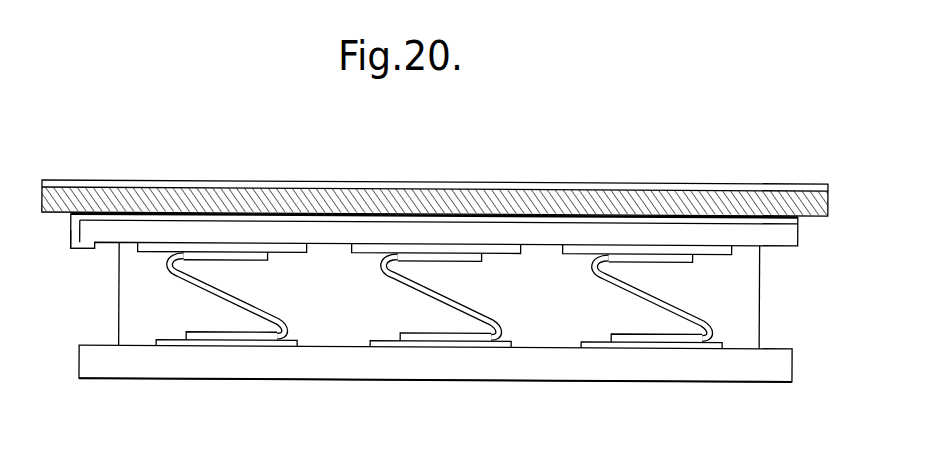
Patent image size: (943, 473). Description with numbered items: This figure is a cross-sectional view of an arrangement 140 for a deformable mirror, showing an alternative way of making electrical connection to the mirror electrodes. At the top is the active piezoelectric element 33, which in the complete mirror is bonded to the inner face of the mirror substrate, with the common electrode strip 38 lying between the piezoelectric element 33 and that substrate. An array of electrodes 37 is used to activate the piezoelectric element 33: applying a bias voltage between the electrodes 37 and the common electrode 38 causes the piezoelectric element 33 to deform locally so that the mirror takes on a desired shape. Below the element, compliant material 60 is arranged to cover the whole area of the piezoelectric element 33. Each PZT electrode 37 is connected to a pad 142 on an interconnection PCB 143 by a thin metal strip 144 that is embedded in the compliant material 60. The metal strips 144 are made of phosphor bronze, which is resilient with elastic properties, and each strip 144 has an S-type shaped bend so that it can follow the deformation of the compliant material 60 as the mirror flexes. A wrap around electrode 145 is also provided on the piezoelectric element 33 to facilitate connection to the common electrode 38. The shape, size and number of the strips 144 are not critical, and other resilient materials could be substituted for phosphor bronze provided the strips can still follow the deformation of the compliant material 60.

The arrangement 140 is at (152, 84).
The common electrode strip 38 is at (125, 223).
The electrodes 37 is at (580, 240).
The piezoelectric element 33 is at (587, 232).
The thin metal strip 144 is at (673, 302).
The wrap around electrode 145 is at (67, 252).
The pad 142 is at (173, 343).
The compliant material 60 is at (328, 328).
The interconnection PCB 143 is at (527, 344).